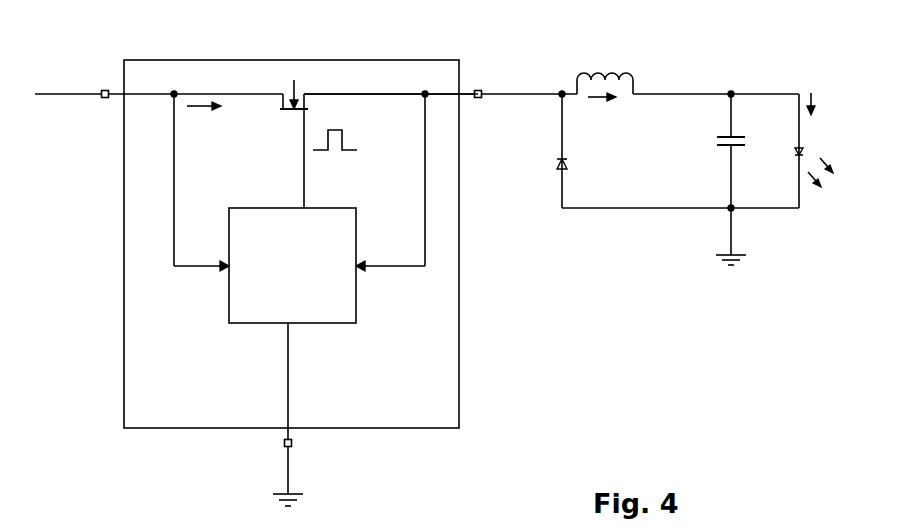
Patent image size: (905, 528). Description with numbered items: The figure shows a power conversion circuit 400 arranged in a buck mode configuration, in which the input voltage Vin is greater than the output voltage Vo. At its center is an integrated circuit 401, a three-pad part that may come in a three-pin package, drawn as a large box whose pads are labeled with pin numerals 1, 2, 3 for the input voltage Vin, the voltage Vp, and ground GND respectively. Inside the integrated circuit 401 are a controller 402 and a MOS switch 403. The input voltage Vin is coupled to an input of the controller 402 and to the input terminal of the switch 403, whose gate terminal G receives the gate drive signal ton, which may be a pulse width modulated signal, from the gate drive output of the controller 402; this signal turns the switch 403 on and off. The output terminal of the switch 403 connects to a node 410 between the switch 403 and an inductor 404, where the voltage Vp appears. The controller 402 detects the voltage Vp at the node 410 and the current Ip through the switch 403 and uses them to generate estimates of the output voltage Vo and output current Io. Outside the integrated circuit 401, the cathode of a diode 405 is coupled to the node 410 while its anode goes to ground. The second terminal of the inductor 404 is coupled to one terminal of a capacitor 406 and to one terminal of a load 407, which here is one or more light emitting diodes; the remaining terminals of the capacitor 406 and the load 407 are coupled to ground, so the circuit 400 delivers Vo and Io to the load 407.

The power conversion circuit 400 is at (710, 357).
The integrated circuit 401 is at (459, 356).
The controller 402 is at (335, 323).
The MOS switch 403 is at (275, 110).
The inductor 404 is at (633, 72).
The diode 405 is at (556, 164).
The capacitor 406 is at (714, 142).
The load 407 is at (798, 150).
The node 410 is at (425, 93).
The input terminal Vin 1 is at (105, 108).
The output terminal Vp 2 is at (481, 110).
The ground terminal GND 3 is at (300, 445).